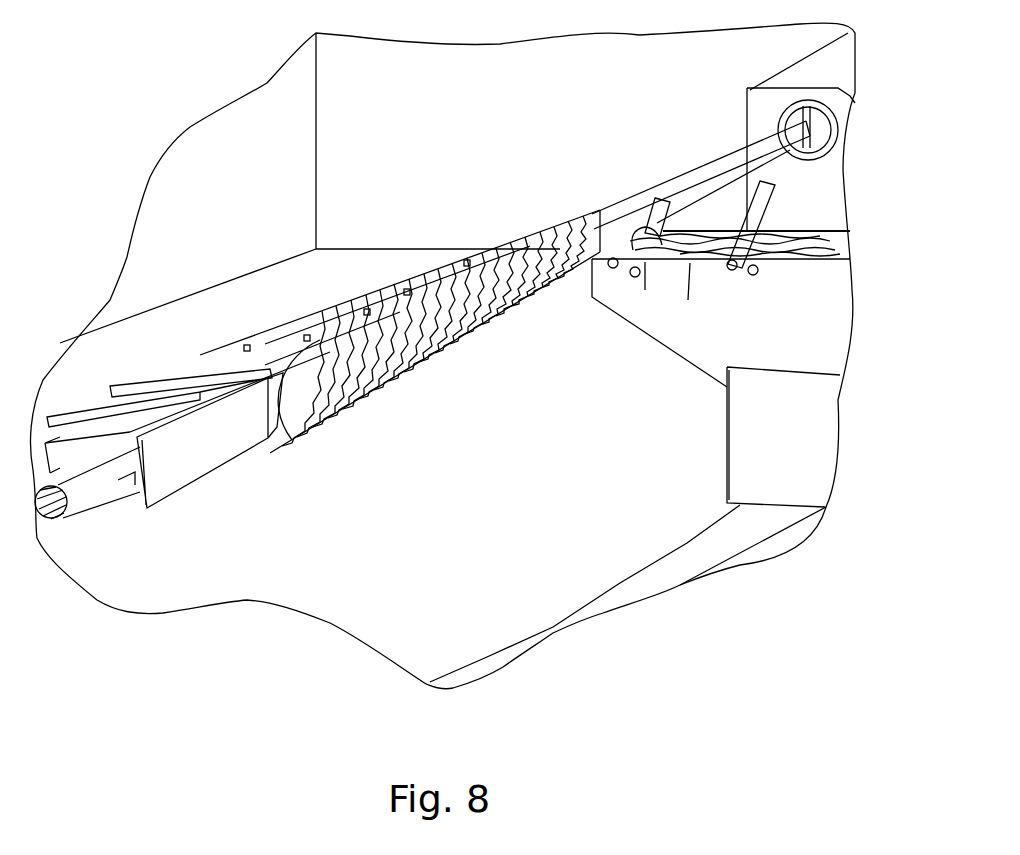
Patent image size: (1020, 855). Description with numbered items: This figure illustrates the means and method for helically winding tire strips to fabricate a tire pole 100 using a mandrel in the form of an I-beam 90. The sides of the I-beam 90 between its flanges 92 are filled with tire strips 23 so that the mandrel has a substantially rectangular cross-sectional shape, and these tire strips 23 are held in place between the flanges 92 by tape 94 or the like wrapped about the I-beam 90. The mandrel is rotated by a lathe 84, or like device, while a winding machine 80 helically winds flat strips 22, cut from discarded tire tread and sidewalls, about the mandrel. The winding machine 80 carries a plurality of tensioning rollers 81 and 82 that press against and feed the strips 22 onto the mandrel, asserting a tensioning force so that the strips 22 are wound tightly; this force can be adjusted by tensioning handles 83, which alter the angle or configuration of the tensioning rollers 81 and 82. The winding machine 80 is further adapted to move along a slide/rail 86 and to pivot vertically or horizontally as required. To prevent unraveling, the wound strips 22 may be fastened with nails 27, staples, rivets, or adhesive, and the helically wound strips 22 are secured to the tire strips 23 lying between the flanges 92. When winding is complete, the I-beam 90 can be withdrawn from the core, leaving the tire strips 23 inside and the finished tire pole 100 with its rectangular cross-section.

The tire pole 100 is at (280, 267).
The flat strips 22 is at (403, 373).
The tire strips 23 is at (590, 210).
The nails 27 is at (465, 262).
The winding machine 80 is at (801, 478).
The tensioning roller 81 is at (632, 298).
The tensioning roller 82 is at (670, 268).
The tensioning handles 83 is at (760, 200).
The lathe 84 is at (800, 73).
The slide/rail 86 is at (657, 578).
The I-beam 90 is at (240, 455).
The flanges 92 is at (45, 440).
The tape 94 is at (690, 182).